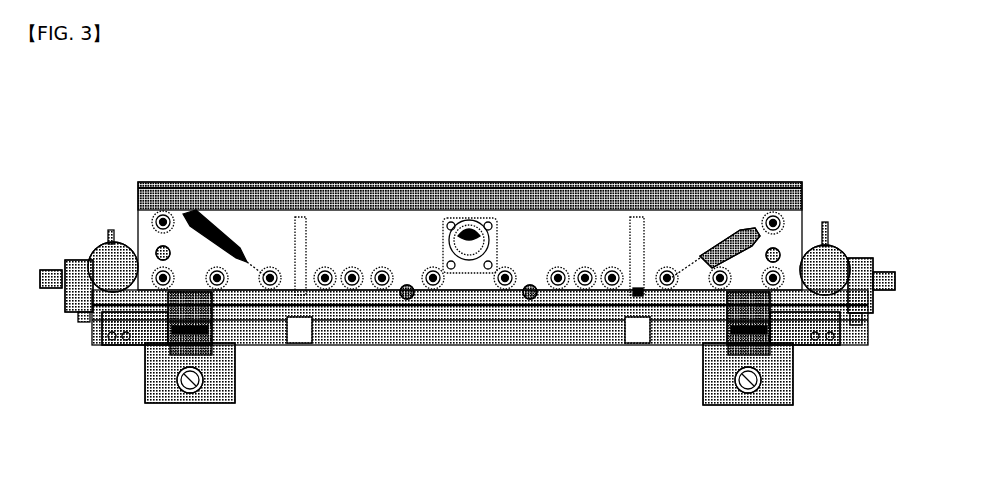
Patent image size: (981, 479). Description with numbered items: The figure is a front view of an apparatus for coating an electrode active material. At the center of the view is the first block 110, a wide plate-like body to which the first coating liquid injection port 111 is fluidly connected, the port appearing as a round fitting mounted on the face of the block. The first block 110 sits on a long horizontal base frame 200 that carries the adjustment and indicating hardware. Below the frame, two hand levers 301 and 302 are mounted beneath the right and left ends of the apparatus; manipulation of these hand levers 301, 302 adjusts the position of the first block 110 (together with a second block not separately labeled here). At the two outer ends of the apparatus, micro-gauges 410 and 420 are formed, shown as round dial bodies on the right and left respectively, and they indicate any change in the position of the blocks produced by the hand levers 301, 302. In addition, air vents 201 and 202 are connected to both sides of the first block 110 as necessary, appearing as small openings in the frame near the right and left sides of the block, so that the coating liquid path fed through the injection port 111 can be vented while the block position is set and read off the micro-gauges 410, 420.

The first block 110 is at (548, 235).
The first coating liquid injection port 111 is at (482, 222).
The base frame 200 is at (480, 317).
The air vent 201 is at (628, 340).
The air vent 202 is at (300, 327).
The hand lever 301 is at (790, 392).
The hand lever 302 is at (170, 382).
The micro-gauge 410 is at (830, 275).
The micro-gauge 420 is at (103, 248).